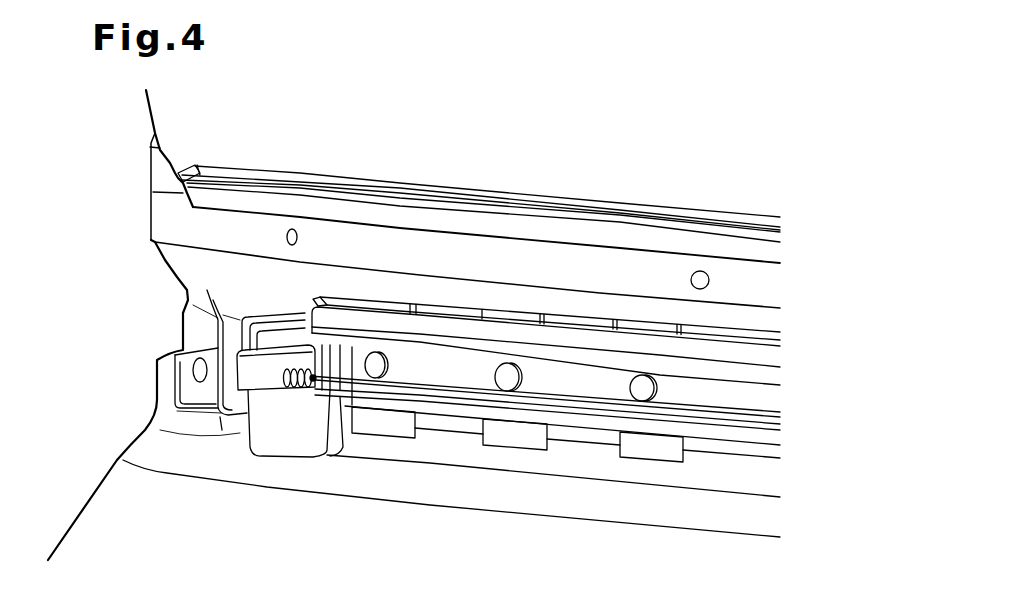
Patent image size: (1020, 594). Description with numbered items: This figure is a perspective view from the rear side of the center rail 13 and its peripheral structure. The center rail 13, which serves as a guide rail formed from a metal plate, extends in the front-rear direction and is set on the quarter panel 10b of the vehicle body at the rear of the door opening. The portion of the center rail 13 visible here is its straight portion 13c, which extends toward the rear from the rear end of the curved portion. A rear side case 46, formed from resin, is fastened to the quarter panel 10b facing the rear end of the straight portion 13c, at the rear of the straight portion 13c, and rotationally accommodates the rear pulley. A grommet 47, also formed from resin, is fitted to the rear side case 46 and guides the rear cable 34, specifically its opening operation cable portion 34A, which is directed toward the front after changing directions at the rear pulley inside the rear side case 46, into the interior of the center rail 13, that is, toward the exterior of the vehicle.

The quarter panel 10b is at (100, 492).
The center rail 13 is at (522, 333).
The straight portion 13c is at (387, 313).
The rear cable 34 is at (547, 446).
The opening operation cable portion 34A is at (445, 392).
The rear side case 46 is at (261, 385).
The grommet 47 is at (303, 387).